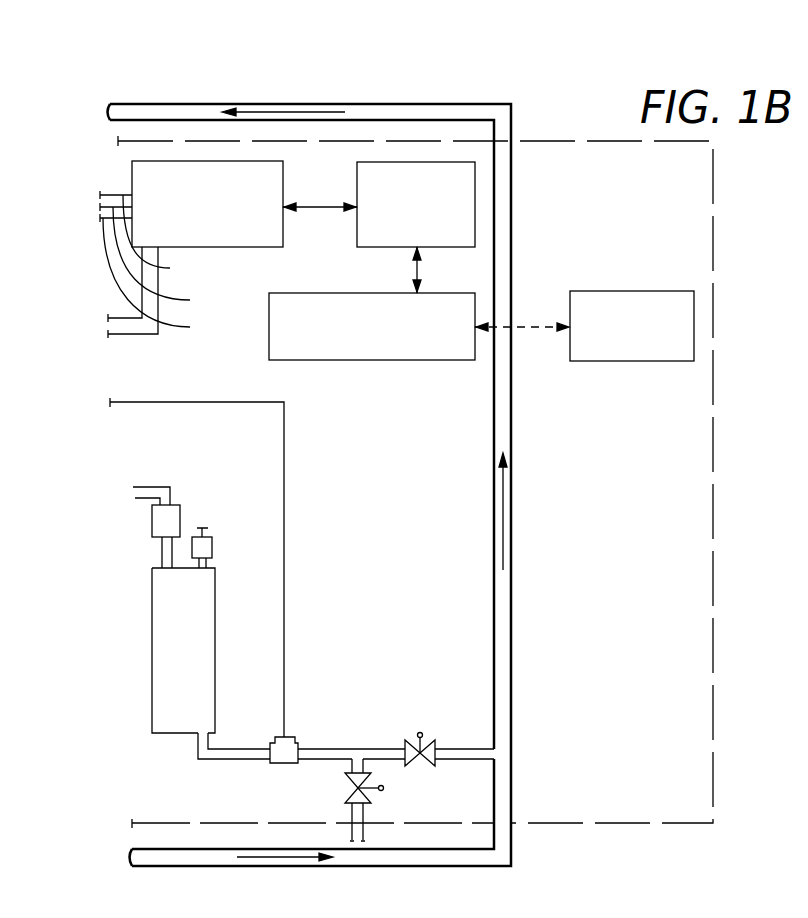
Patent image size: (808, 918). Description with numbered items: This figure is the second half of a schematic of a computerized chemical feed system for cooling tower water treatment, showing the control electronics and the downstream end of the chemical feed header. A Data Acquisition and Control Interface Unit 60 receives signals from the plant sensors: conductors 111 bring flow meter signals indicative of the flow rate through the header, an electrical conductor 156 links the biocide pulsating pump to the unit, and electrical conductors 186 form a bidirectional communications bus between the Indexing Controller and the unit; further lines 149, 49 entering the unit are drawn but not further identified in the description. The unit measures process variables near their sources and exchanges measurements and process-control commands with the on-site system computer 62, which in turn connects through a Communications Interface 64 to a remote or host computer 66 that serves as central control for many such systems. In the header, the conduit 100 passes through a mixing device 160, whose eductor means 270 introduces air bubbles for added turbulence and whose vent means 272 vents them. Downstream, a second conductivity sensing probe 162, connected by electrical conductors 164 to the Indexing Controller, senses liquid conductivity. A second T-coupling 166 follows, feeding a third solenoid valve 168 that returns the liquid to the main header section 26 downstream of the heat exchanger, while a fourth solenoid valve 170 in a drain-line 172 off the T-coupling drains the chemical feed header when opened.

The main header section 26 is at (520, 608).
The Data Acquisition and Control Interface Unit 60 is at (285, 180).
The system computer 62 is at (355, 233).
The Communications Interface 64 is at (405, 362).
The remote computer 66 is at (627, 363).
The electrical conductors 186 is at (176, 240).
The signal line 149 is at (176, 261).
The electrical conductor 156 is at (171, 282).
The conductors 111 is at (133, 318).
The control line 49 is at (122, 335).
The electrical conductors 164 is at (287, 642).
The conduit 100 is at (152, 490).
The eductor means 270 is at (173, 517).
The vent means 272 is at (212, 543).
The mixing device 160 is at (205, 612).
The second conductivity sensing probe 162 is at (295, 745).
The second T-coupling 166 is at (360, 750).
The third solenoid valve 168 is at (435, 750).
The fourth solenoid valve 170 is at (353, 790).
The drain-line 172 is at (367, 767).